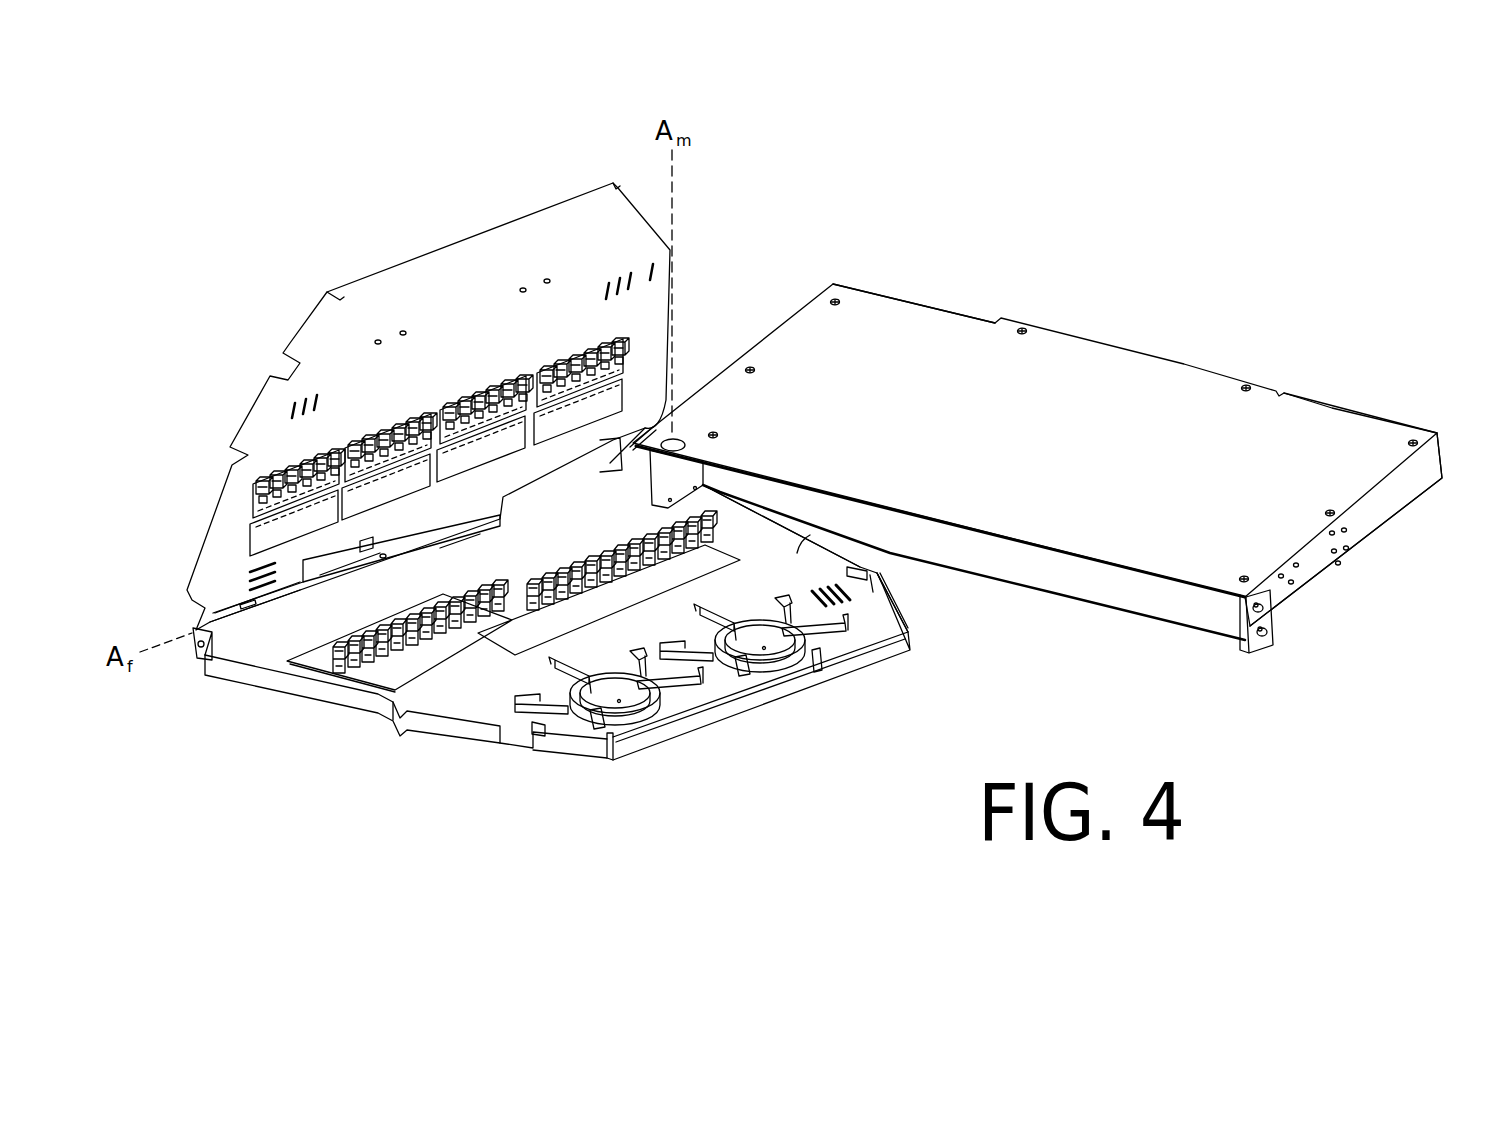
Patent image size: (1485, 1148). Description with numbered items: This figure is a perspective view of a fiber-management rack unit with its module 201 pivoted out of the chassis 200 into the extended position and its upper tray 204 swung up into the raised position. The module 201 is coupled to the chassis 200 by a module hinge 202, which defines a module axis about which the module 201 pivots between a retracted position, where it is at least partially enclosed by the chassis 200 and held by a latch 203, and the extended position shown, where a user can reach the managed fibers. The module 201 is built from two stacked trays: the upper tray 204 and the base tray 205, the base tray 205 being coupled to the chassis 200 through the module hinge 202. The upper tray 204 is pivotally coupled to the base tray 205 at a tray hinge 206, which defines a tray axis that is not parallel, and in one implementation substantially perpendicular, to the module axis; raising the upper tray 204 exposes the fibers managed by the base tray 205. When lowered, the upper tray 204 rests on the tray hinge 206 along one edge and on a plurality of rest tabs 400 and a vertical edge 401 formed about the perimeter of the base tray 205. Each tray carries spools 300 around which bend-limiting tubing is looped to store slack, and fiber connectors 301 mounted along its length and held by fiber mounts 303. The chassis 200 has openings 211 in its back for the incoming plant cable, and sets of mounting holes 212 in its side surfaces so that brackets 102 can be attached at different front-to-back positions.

The bracket 102 is at (1262, 640).
The chassis 200 is at (1086, 386).
The module 201 is at (843, 692).
The module hinge 202 is at (682, 437).
The latch 203 is at (200, 660).
The upper tray 204 is at (457, 275).
The base tray 205 is at (868, 618).
The tray hinge 206 is at (290, 598).
The openings 211 is at (917, 280).
The mounting holes 212 is at (1377, 566).
The spool 300 is at (620, 717).
The fiber connector 301 is at (393, 667).
The fiber mount 303 is at (343, 670).
The rest tab 400 is at (538, 736).
The vertical edge 401 is at (767, 690).